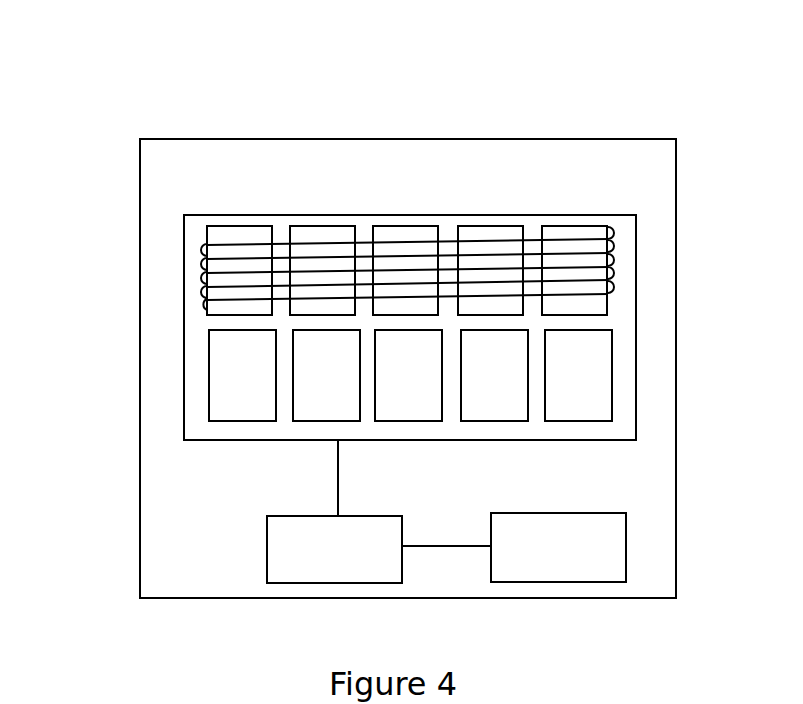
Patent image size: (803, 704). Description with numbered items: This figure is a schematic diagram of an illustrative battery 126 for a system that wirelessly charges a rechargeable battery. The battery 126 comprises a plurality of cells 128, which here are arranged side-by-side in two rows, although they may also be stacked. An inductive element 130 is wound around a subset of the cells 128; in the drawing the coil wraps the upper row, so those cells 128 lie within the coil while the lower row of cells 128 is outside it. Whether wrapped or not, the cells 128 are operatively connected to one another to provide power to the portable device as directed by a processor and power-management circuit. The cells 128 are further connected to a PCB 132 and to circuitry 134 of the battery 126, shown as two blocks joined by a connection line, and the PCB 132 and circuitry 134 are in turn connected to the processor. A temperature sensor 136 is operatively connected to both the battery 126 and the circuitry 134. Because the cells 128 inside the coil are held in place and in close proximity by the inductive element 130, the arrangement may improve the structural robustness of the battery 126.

The battery 126 is at (553, 93).
The cells 128 is at (238, 235).
The inductive element 130 is at (203, 304).
The PCB 132 is at (626, 563).
The circuitry 134 is at (429, 546).
The temperature sensor 136 is at (283, 523).